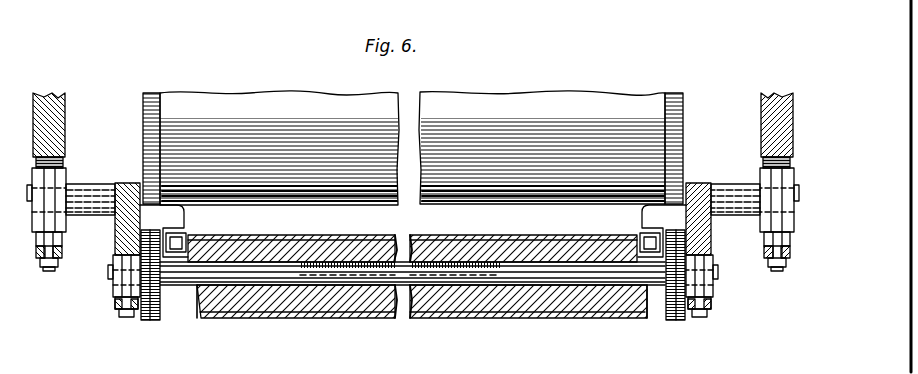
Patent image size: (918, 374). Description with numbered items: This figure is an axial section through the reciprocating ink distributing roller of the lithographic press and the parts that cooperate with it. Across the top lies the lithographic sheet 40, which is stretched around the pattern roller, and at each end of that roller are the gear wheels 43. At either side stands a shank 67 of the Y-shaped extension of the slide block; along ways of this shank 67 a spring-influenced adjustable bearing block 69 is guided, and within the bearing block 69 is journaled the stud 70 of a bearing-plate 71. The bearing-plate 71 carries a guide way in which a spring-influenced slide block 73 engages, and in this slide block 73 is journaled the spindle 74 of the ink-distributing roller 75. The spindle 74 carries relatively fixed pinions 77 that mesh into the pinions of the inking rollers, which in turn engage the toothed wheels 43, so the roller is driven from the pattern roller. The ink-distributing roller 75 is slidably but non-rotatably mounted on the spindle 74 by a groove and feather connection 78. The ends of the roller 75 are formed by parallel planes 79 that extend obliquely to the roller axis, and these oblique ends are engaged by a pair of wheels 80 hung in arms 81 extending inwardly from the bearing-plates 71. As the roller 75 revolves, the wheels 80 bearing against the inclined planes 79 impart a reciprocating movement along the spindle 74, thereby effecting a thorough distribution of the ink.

The lithographic sheet 40 is at (412, 148).
The gear wheels 43 is at (153, 93).
The shank 67 is at (66, 128).
The adjustable bearing block 69 is at (62, 181).
The stud 70 is at (87, 212).
The bearing-plate 71 is at (128, 183).
The slide block 73 is at (113, 288).
The spindle 74 is at (273, 270).
The ink-distributing roller 75 is at (468, 318).
The pinions 77 is at (152, 322).
The groove and feather connection 78 is at (490, 268).
The parallel planes 79 is at (200, 305).
The wheels 80 is at (183, 236).
The arms 81 is at (170, 219).